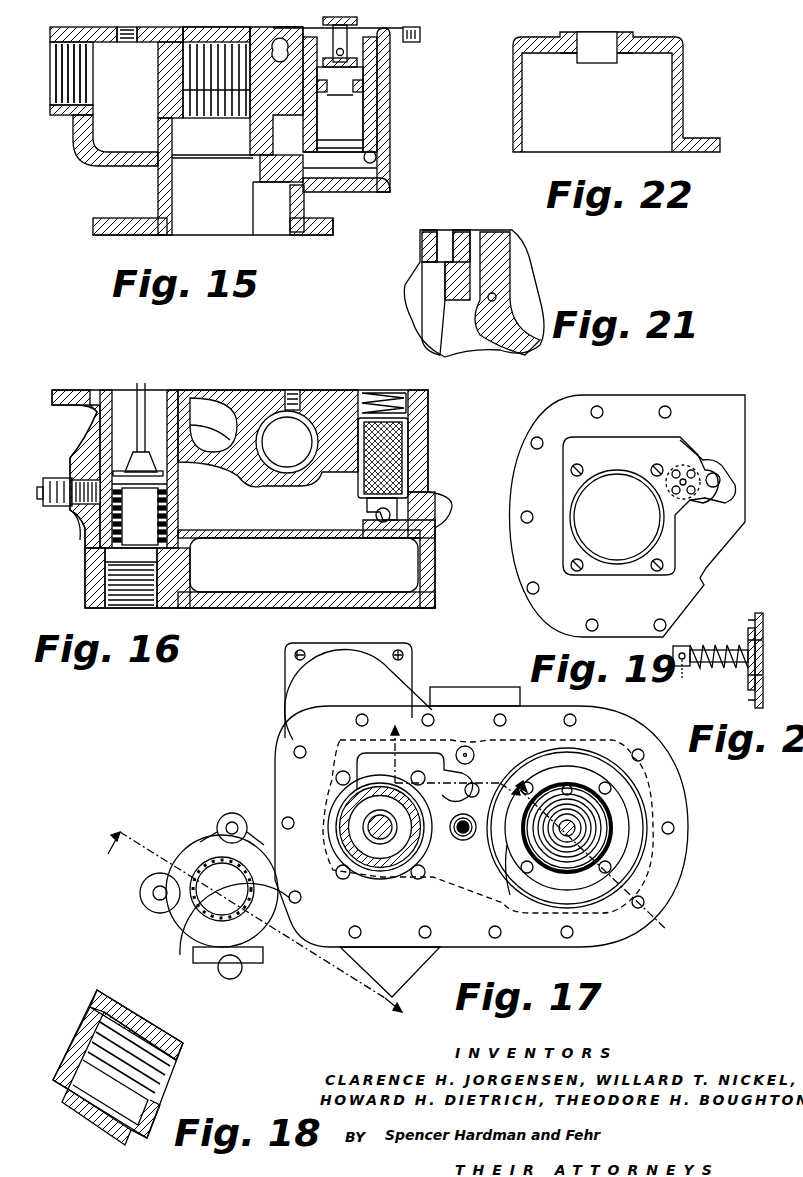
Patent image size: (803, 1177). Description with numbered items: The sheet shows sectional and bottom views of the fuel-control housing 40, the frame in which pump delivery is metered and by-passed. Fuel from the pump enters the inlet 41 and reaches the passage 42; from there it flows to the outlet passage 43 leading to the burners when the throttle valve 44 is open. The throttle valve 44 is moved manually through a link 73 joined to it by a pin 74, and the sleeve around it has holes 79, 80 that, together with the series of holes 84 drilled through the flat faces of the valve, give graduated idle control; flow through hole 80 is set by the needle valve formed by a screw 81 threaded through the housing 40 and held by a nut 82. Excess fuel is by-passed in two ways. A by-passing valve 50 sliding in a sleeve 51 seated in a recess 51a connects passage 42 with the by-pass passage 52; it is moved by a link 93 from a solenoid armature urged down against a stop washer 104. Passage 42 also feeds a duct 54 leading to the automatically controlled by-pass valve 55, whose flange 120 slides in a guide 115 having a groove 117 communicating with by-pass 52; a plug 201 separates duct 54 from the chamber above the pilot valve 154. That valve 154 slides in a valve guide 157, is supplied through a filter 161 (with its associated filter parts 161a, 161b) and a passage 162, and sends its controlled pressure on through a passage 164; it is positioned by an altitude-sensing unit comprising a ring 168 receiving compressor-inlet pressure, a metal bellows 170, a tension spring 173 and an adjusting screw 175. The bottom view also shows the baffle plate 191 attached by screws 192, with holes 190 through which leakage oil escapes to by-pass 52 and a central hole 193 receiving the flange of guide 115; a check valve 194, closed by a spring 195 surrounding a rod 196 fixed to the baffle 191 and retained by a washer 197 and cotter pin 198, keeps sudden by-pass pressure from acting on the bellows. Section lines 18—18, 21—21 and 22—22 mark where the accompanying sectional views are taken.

In FIG. 15, the housing 40 is at (100, 163).
In FIG. 22, the housing 40 is at (683, 98).
In FIG. 21, the housing 40 is at (502, 228).
In FIG. 16, the housing 40 is at (88, 430).
In FIG. 19, the housing 40 is at (745, 398).
In FIG. 17, the housing 40 is at (688, 828).
In FIG. 15, the inlet 41 is at (50, 70).
In FIG. 16, the inlet 41 is at (305, 432).
In FIG. 15, the passage 42 is at (93, 126).
In FIG. 16, the passage 42 is at (290, 523).
In FIG. 16, the outlet passage 43 is at (140, 600).
In FIG. 17, the outlet passage 43 is at (203, 905).
In FIG. 18, the outlet passage 43 is at (150, 1030).
In FIG. 16, the throttle valve 44 is at (178, 455).
In FIG. 15, the by-passing valve 50 is at (328, 153).
In FIG. 15, the sleeve 51 is at (377, 72).
In FIG. 15, the recess 51a is at (375, 152).
In FIG. 15, the by-pass passage 52 is at (383, 173).
In FIG. 15, the duct 54 is at (165, 168).
In FIG. 17, the by-pass valve 55 is at (378, 840).
In FIG. 16, the link 73 is at (137, 432).
In FIG. 16, the pin 74 is at (163, 474).
In FIG. 16, the hole 79 is at (85, 516).
In FIG. 16, the hole 80 is at (167, 497).
In FIG. 16, the screw 81 is at (72, 482).
In FIG. 16, the nut 82 is at (48, 508).
In FIG. 16, the holes 84 is at (153, 538).
In FIG. 15, the link 93 is at (348, 42).
In FIG. 15, the stop washer 104 is at (420, 40).
In FIG. 17, the guide 115 is at (387, 858).
In FIG. 17, the groove 117 is at (350, 825).
In FIG. 19, the flange 120 is at (680, 470).
In FIG. 17, the valve 154 is at (465, 838).
In FIG. 17, the valve guide 157 is at (456, 838).
In FIG. 16, the filter 161 is at (398, 448).
In FIG. 17, the filter 161 is at (573, 798).
In FIG. 16, the filter sleeve 161a is at (410, 432).
In FIG. 16, the filter support 161b is at (367, 508).
In FIG. 16, the passage 162 is at (384, 523).
In FIG. 17, the passage 164 is at (468, 746).
In FIG. 17, the ring 168 is at (622, 855).
In FIG. 17, the metal bellows 170 is at (612, 822).
In FIG. 17, the tension spring 173 is at (545, 860).
In FIG. 17, the screw 175 is at (580, 818).
In FIG. 19, the holes 190 is at (690, 476).
In FIG. 20, the holes 190 is at (758, 657).
In FIG. 19, the baffle plate 191 is at (672, 534).
In FIG. 20, the baffle plate 191 is at (757, 640).
In FIG. 19, the screws 192 is at (657, 466).
In FIG. 19, the central hole 193 is at (583, 535).
In FIG. 20, the check valve 194 is at (750, 640).
In FIG. 20, the spring 195 is at (728, 645).
In FIG. 20, the rod 196 is at (726, 668).
In FIG. 20, the washer 197 is at (683, 668).
In FIG. 20, the cotter pin 198 is at (676, 668).
In FIG. 15, the plug 201 is at (183, 108).
In FIG. 17, the section line 18 is at (260, 934).
In FIG. 17, the section line 21 is at (452, 761).
In FIG. 17, the section line 22 is at (672, 927).